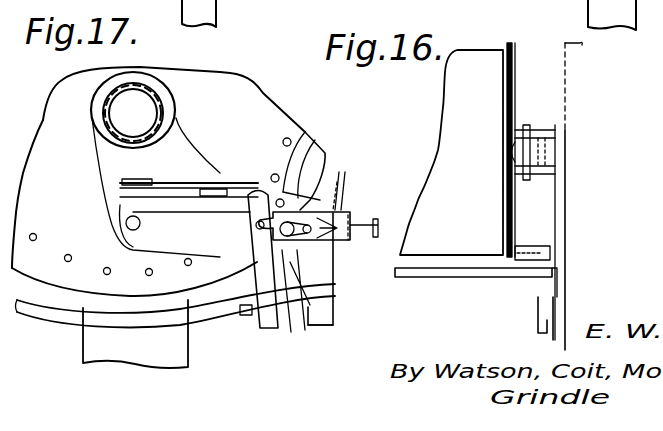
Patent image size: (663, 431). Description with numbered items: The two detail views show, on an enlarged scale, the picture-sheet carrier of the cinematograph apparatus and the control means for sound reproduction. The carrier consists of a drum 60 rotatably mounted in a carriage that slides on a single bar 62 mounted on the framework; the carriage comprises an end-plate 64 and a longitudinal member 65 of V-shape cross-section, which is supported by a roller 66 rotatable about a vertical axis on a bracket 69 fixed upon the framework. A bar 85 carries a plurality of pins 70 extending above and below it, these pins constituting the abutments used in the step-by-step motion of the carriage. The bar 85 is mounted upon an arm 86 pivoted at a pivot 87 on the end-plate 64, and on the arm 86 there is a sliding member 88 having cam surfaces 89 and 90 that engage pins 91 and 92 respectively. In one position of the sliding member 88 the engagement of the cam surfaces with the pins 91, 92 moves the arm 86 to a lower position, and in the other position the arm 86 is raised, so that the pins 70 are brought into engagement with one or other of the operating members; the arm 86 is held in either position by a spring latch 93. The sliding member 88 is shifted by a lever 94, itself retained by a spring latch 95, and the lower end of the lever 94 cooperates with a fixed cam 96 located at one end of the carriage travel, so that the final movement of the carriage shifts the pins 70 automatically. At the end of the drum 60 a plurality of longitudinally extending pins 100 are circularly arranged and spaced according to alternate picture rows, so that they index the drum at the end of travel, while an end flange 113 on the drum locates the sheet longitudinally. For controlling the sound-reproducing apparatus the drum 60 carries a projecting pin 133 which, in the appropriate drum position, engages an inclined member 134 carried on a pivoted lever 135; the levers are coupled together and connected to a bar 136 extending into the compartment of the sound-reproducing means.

In FIG. 17, the drum 60 is at (236, 79).
In FIG. 16, the drum 60 is at (512, 33).
In FIG. 17, the bar 62 is at (163, 117).
In FIG. 16, the bar 62 is at (537, 128).
In FIG. 17, the end-plate 64 is at (178, 147).
In FIG. 17, the longitudinal member 65 is at (338, 239).
In FIG. 17, the roller 66 is at (346, 182).
In FIG. 17, the bracket 69 is at (334, 296).
In FIG. 17, the pins 70 is at (376, 222).
In FIG. 17, the bar 85 is at (349, 196).
In FIG. 17, the arm 86 is at (157, 228).
In FIG. 17, the pivot 87 is at (127, 220).
In FIG. 17, the sliding member 88 is at (303, 248).
In FIG. 17, the cam surface 89 is at (320, 200).
In FIG. 17, the cam surface 90 is at (317, 323).
In FIG. 17, the pin 91 is at (305, 134).
In FIG. 17, the pin 92 is at (289, 327).
In FIG. 17, the spring latch 93 is at (157, 183).
In FIG. 17, the lever 94 is at (265, 310).
In FIG. 17, the spring latch 95 is at (190, 183).
In FIG. 17, the fixed cam 96 is at (248, 313).
In FIG. 17, the pins 100 is at (272, 176).
In FIG. 16, the end flange 113 is at (514, 43).
In FIG. 16, the projecting pin 133 is at (530, 243).
In FIG. 16, the inclined member 134 is at (548, 260).
In FIG. 16, the pivoted lever 135 is at (550, 288).
In FIG. 16, the bar 136 is at (538, 320).